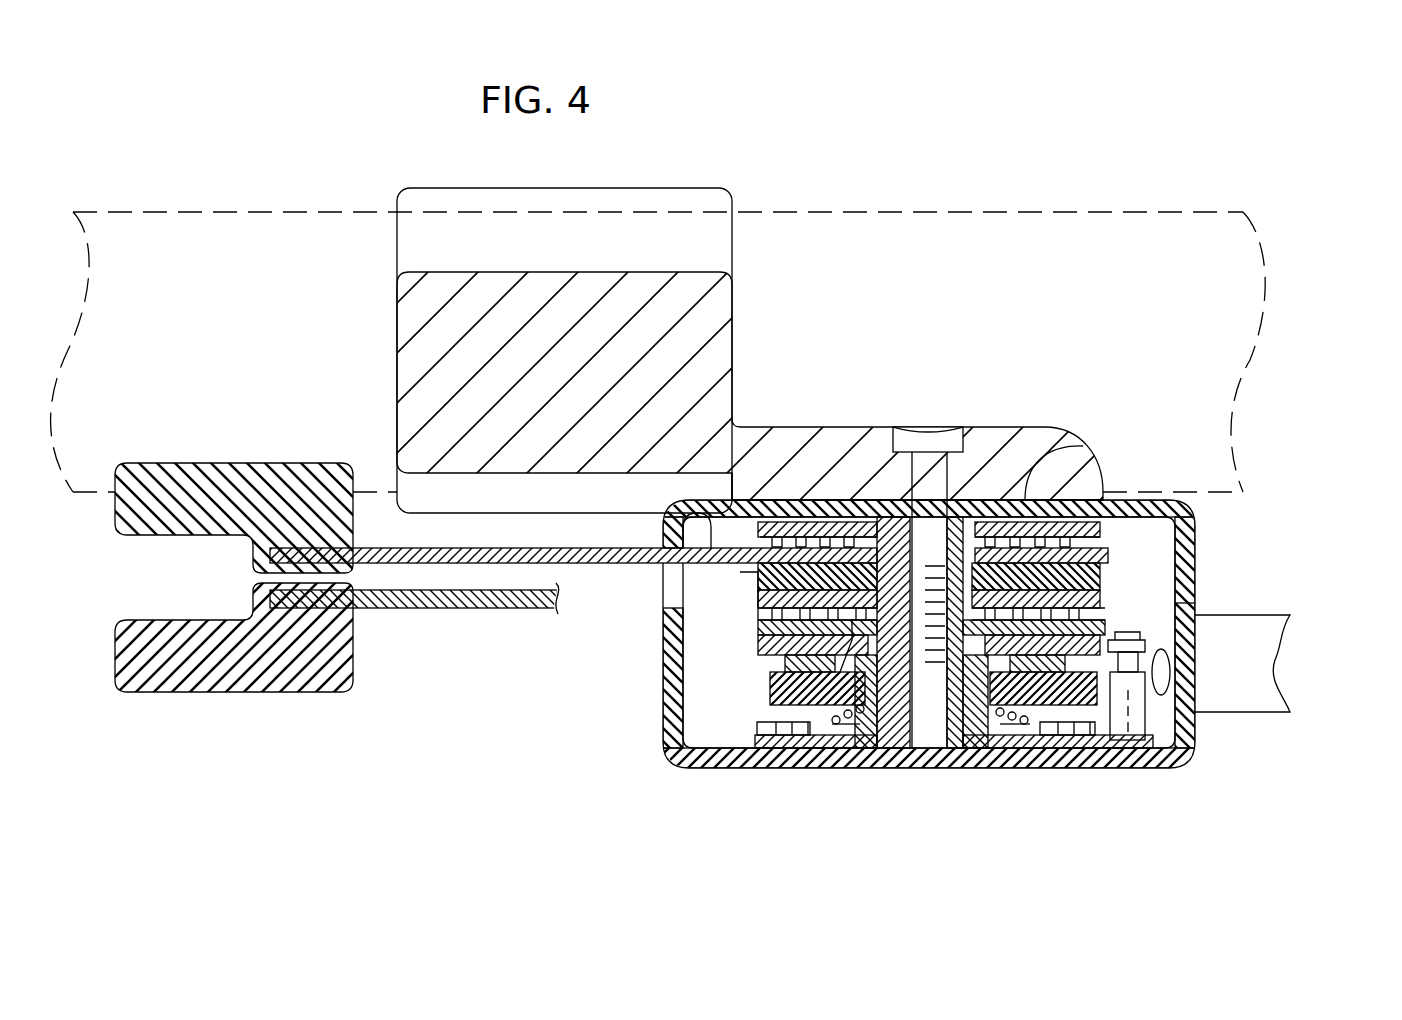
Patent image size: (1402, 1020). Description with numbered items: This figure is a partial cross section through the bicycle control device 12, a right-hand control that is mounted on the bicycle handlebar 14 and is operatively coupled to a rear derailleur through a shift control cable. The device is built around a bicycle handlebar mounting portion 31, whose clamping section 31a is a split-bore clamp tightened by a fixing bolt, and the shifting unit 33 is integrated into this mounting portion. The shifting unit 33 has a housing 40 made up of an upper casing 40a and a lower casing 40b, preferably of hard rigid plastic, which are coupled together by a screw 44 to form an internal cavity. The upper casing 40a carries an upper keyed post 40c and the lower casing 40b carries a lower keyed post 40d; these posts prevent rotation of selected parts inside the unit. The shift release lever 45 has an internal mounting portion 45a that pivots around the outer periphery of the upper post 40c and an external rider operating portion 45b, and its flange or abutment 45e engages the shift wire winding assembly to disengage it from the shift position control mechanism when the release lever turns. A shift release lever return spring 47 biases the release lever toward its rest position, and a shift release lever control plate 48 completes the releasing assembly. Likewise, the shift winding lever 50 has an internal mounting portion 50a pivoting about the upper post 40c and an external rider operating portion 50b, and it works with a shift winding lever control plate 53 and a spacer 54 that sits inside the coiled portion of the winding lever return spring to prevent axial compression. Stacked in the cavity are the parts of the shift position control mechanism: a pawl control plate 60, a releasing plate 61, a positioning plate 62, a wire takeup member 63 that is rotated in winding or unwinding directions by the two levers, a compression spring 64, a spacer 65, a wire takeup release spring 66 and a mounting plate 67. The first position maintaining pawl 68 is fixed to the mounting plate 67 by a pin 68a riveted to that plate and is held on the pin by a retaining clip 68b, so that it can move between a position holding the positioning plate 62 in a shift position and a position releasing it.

The bicycle control device 12 is at (948, 122).
The bicycle handlebar 14 is at (1137, 210).
The bicycle handlebar mounting portion 31 is at (724, 326).
The clamping section 31a is at (397, 245).
The shifting unit 33 is at (901, 652).
The housing 40 is at (989, 591).
The upper casing 40a is at (1196, 575).
The lower casing 40b is at (1257, 657).
The upper keyed shaft or post 40c is at (1000, 522).
The lower keyed shaft or post 40d is at (965, 748).
The fastener or screw 44 is at (912, 427).
The shift release lever 45 is at (472, 498).
The internal mounting portion 45a is at (688, 512).
The external rider operating portion 45b is at (255, 463).
The flange or abutment 45e is at (745, 592).
The shift release lever return spring 47 is at (1104, 543).
The shift release lever control plate 48 is at (1104, 530).
The shift winding lever 50 is at (406, 658).
The internal mounting portion 50a is at (1085, 440).
The external rider operating portion 50b is at (285, 693).
The shift winding lever control plate 53 is at (758, 580).
The spacer 54 is at (852, 690).
The pawl control plate 60 is at (757, 628).
The releasing member or plate 61 is at (757, 645).
The positioning member or plate 62 is at (755, 667).
The wire takeup member 63 is at (768, 697).
The compression spring 64 is at (1035, 740).
The spacer 65 is at (880, 725).
The wire takeup release spring or biasing member 66 is at (768, 718).
The mounting plate 67 is at (768, 738).
The first position maintaining member or pawl 68 is at (1171, 683).
The pin 68a is at (1172, 752).
The retaining clip 68b is at (1145, 640).